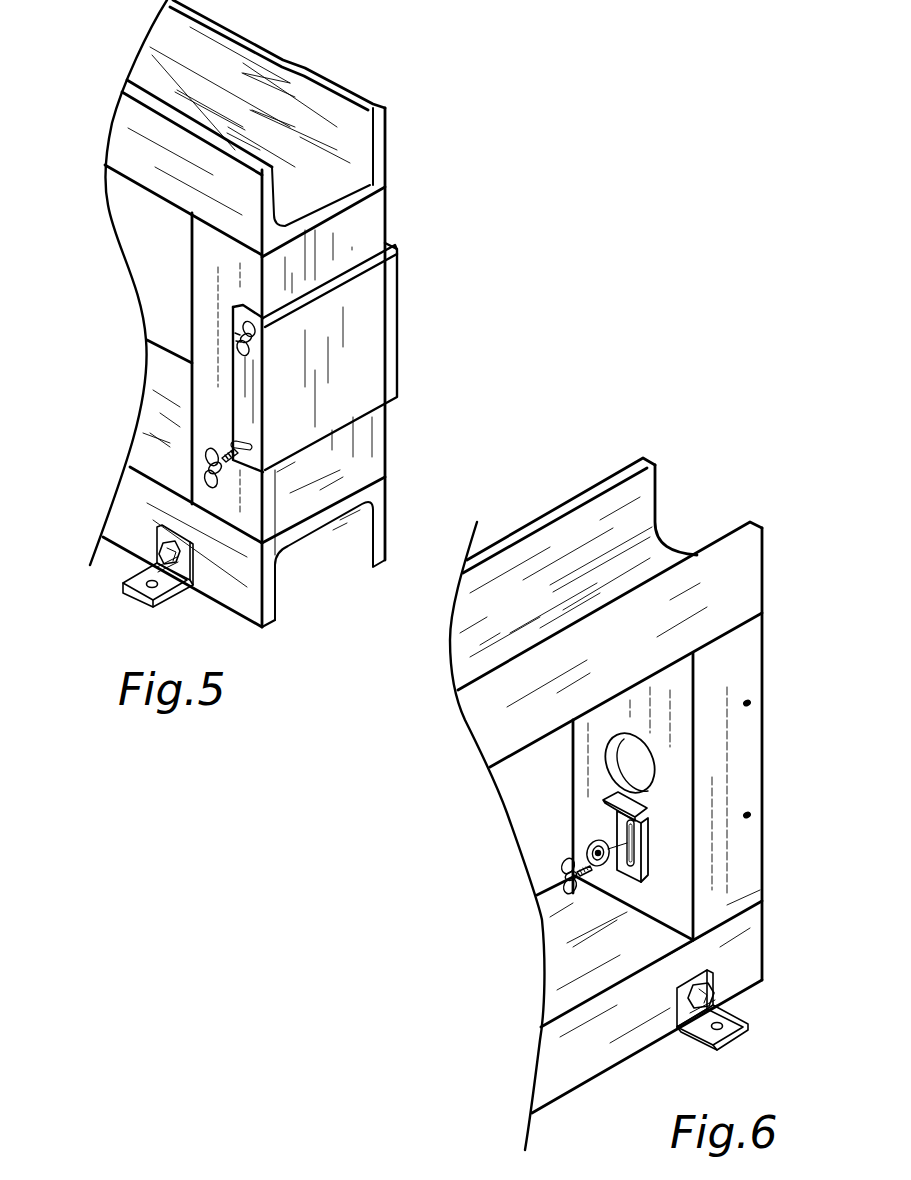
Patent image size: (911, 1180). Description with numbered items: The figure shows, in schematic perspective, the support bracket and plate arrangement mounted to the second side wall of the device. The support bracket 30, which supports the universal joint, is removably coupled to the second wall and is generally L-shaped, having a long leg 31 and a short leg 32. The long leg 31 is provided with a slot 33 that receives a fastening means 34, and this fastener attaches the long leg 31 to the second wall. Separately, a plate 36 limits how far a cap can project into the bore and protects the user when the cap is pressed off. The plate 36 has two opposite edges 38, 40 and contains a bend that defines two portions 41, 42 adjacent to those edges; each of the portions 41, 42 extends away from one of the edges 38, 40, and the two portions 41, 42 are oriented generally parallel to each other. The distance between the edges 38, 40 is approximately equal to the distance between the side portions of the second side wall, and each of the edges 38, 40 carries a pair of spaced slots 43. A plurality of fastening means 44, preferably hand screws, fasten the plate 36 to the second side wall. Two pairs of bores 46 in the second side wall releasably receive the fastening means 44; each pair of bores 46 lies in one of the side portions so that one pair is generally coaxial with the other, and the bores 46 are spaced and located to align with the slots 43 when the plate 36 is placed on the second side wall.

In FIG. 6, the support bracket 30 is at (647, 886).
In FIG. 6, the long leg 31 is at (645, 848).
In FIG. 6, the short leg 32 is at (613, 795).
In FIG. 6, the slot 33 is at (637, 860).
In FIG. 6, the fastening means 34 is at (568, 868).
In FIG. 5, the plate 36 is at (368, 377).
In FIG. 5, the edge 38 is at (387, 318).
In FIG. 5, the edge 40 is at (267, 420).
In FIG. 5, the portion 41 is at (385, 242).
In FIG. 5, the portion 42 is at (240, 302).
In FIG. 5, the slots 43 is at (237, 447).
In FIG. 5, the fastening means 44 is at (202, 465).
In FIG. 6, the bores 46 is at (752, 703).